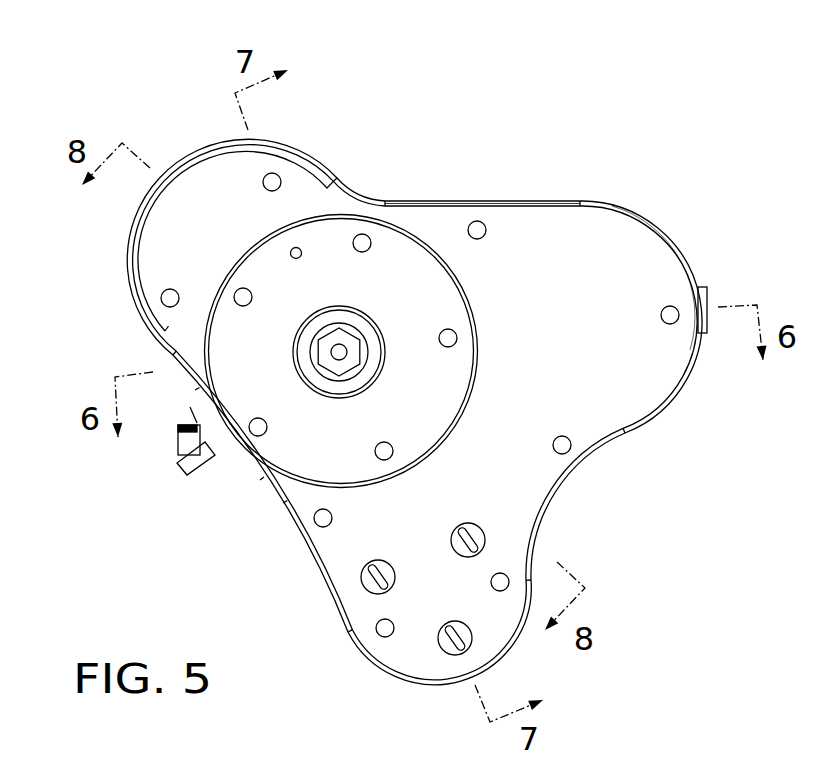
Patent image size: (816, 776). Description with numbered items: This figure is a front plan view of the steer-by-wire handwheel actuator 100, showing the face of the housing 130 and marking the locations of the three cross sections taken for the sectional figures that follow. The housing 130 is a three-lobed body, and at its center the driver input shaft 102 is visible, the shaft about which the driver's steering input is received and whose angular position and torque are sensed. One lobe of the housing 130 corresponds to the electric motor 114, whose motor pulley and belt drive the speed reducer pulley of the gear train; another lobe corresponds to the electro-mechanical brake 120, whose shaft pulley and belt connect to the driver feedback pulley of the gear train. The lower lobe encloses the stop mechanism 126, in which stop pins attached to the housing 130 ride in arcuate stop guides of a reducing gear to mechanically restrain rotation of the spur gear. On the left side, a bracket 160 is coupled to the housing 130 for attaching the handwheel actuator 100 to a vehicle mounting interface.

The handwheel actuator 100 is at (220, 538).
The driver input shaft 102 is at (350, 330).
The electric motor 114 is at (656, 266).
The electro-mechanical brake 120 is at (185, 158).
The stop mechanism 126 is at (415, 642).
The housing 130 is at (514, 200).
The bracket 160 is at (178, 445).